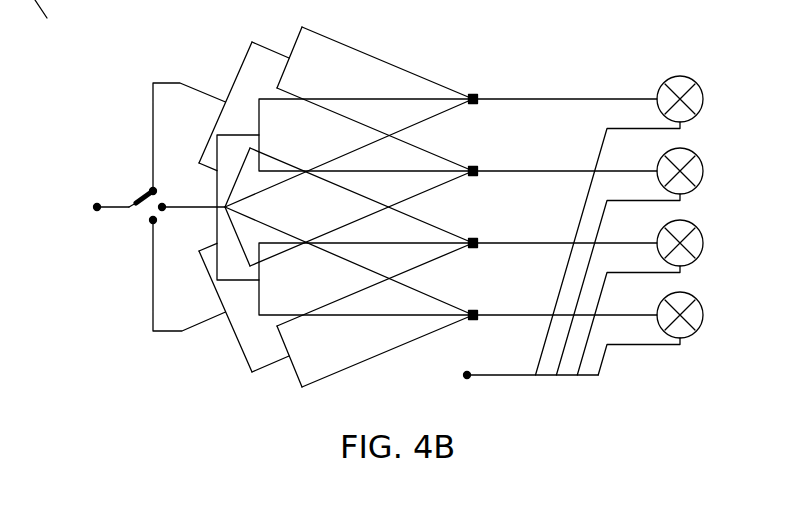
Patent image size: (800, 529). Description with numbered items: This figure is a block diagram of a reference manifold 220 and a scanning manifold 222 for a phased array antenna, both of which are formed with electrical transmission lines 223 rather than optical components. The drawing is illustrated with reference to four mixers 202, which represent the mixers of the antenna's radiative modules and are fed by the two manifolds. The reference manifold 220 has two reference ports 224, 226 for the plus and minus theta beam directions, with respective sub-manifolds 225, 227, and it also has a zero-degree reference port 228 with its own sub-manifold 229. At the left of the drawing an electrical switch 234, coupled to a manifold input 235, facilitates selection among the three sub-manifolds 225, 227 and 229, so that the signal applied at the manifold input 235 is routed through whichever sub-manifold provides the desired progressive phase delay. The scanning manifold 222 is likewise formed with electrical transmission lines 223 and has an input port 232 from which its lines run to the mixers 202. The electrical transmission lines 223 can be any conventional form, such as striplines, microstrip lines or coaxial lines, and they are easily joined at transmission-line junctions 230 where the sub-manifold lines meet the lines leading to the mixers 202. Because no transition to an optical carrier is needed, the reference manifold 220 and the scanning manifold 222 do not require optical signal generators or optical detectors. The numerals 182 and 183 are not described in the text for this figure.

The transmission line 182 is at (56, 25).
The transmission line 183 is at (121, 9).
The mixer 202 is at (702, 111).
The reference manifold 220 is at (597, 97).
The scanning manifold 222 is at (550, 382).
The electrical transmission line 223 is at (431, 152).
The reference port 224 is at (150, 220).
The sub-manifold 225 is at (338, 374).
The reference port 226 is at (156, 191).
The sub-manifold 227 is at (357, 47).
The 0° reference port 228 is at (165, 208).
The sub-manifold 229 is at (264, 318).
The transmission-line junction 230 is at (474, 94).
The input port 232 is at (462, 375).
The electrical switch 234 is at (143, 192).
The manifold input 235 is at (97, 206).